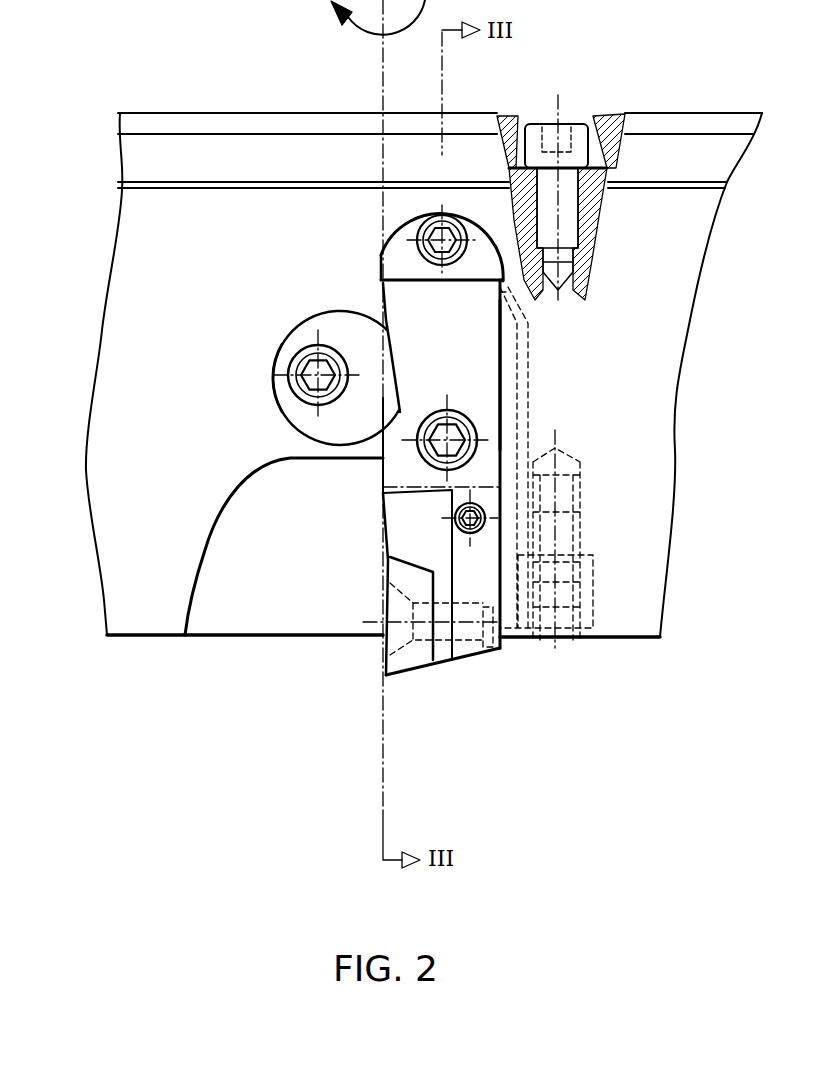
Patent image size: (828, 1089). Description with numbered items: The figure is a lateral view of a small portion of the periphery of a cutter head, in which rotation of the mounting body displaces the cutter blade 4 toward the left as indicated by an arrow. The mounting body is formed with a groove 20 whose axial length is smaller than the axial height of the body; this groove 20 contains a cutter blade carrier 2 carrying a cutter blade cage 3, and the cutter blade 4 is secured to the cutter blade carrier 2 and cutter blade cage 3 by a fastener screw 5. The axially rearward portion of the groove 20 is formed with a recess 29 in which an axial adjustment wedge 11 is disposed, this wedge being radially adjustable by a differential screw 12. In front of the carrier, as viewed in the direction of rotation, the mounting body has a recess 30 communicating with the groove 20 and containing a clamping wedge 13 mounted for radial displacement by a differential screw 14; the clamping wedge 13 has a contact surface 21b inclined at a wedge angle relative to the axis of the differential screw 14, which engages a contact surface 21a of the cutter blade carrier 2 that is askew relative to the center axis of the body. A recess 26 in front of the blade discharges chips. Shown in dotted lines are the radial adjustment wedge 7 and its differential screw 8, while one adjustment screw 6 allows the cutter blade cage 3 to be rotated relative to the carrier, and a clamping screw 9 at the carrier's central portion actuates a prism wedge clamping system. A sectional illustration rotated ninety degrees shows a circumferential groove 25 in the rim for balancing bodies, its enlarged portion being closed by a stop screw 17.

The cutter blade carrier 2 is at (472, 553).
The cutter blade cage 3 is at (418, 522).
The cutter blade 4 is at (407, 577).
The fastener screw 5 is at (488, 658).
The adjustment screw 6 is at (472, 518).
The radial adjustment wedge 7 is at (567, 640).
The differential screw 8 is at (567, 545).
The clamping screw 9 is at (450, 441).
The axial adjustment wedge 11 is at (398, 267).
The differential screw 12 is at (448, 235).
The clamping wedge 13 is at (347, 337).
The differential screw 14 is at (317, 372).
The stop screw 17 is at (575, 130).
The groove 20 is at (500, 375).
The contact surface 21a is at (400, 348).
The contact surface 21b is at (388, 383).
The circumferential groove 25 is at (613, 116).
The recess 26 is at (260, 573).
The recess 29 is at (400, 212).
The recess 30 is at (270, 383).